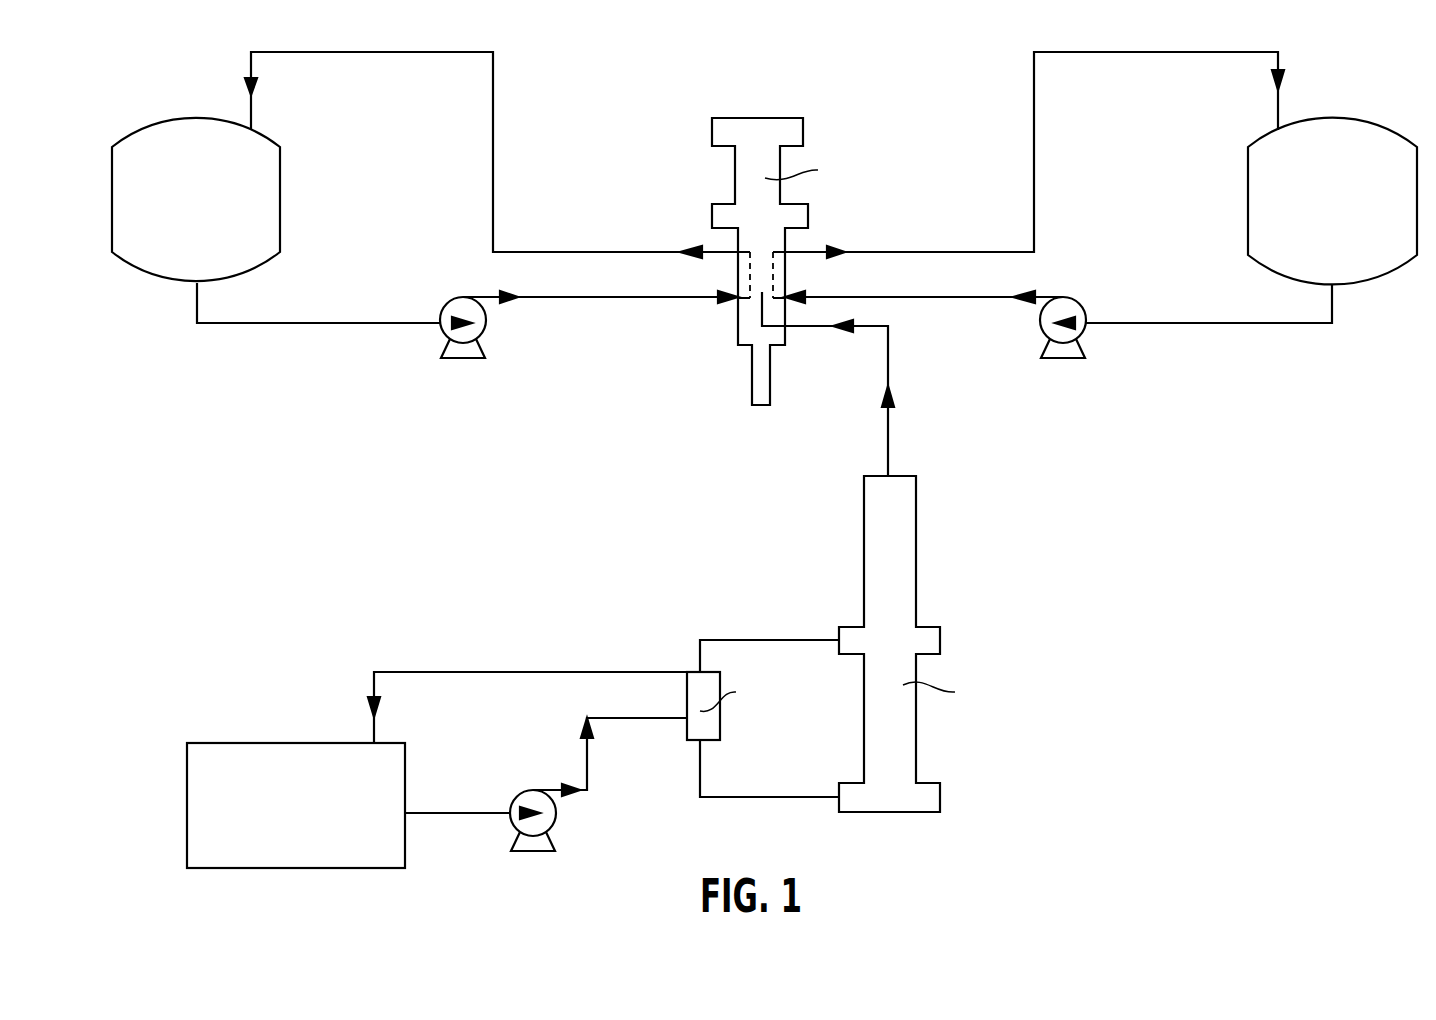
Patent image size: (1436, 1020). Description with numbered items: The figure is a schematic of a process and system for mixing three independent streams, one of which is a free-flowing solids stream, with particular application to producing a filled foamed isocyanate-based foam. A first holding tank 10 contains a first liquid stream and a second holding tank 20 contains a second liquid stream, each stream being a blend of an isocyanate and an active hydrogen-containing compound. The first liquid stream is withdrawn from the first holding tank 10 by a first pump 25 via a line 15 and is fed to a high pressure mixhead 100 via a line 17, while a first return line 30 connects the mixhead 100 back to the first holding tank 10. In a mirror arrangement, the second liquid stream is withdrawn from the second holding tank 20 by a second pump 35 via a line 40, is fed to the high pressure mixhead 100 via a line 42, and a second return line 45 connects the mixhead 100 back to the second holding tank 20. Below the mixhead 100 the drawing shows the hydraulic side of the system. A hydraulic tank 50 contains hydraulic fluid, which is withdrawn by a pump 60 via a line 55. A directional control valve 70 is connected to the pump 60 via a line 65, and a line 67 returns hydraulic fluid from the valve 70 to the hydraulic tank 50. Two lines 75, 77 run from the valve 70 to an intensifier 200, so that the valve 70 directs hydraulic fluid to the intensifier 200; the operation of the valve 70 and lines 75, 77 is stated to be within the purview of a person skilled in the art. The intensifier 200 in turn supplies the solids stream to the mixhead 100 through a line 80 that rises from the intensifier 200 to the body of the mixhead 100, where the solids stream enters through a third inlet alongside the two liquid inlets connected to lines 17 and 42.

The first holding tank 10 is at (224, 240).
The line 15 is at (392, 323).
The line 17 is at (648, 296).
The second holding tank 20 is at (1367, 241).
The first pump 25 is at (487, 322).
The first return line 30 is at (593, 252).
The second pump 35 is at (1048, 318).
The line 40 is at (1155, 323).
The line 42 is at (998, 297).
The second return line 45 is at (985, 252).
The hydraulic tank 50 is at (325, 838).
The line 55 is at (492, 812).
The pump 60 is at (523, 845).
The line 65 is at (593, 717).
The line 67 is at (505, 670).
The directional control valve 70 is at (689, 733).
The line 75 is at (715, 797).
The line 77 is at (730, 640).
The intensifier to mixhead line 80 is at (858, 398).
The high pressure mixhead 100 is at (743, 118).
The intensifier 200 is at (909, 736).